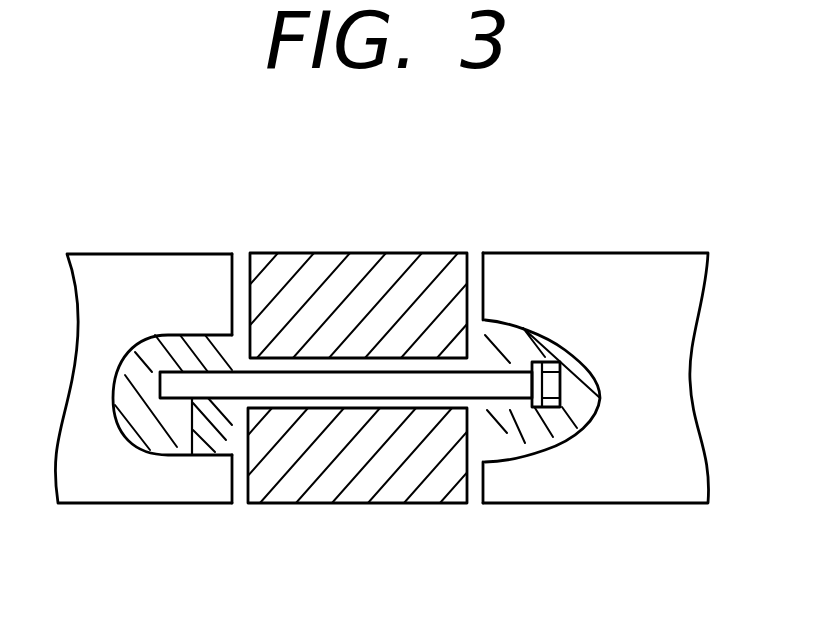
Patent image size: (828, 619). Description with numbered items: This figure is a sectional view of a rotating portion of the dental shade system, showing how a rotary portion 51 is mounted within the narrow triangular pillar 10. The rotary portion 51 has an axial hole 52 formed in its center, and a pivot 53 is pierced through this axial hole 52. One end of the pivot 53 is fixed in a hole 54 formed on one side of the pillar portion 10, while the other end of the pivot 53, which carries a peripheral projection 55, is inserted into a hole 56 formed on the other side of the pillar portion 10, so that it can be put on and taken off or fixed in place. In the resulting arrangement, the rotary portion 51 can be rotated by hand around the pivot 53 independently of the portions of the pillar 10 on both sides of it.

The triangular pillar 10 is at (138, 253).
The rotary portion 51 is at (350, 253).
The axial hole 52 is at (377, 408).
The pivot 53 is at (302, 408).
The hole 54 is at (192, 455).
The peripheral projection 55 is at (600, 400).
The hole 56 is at (510, 408).